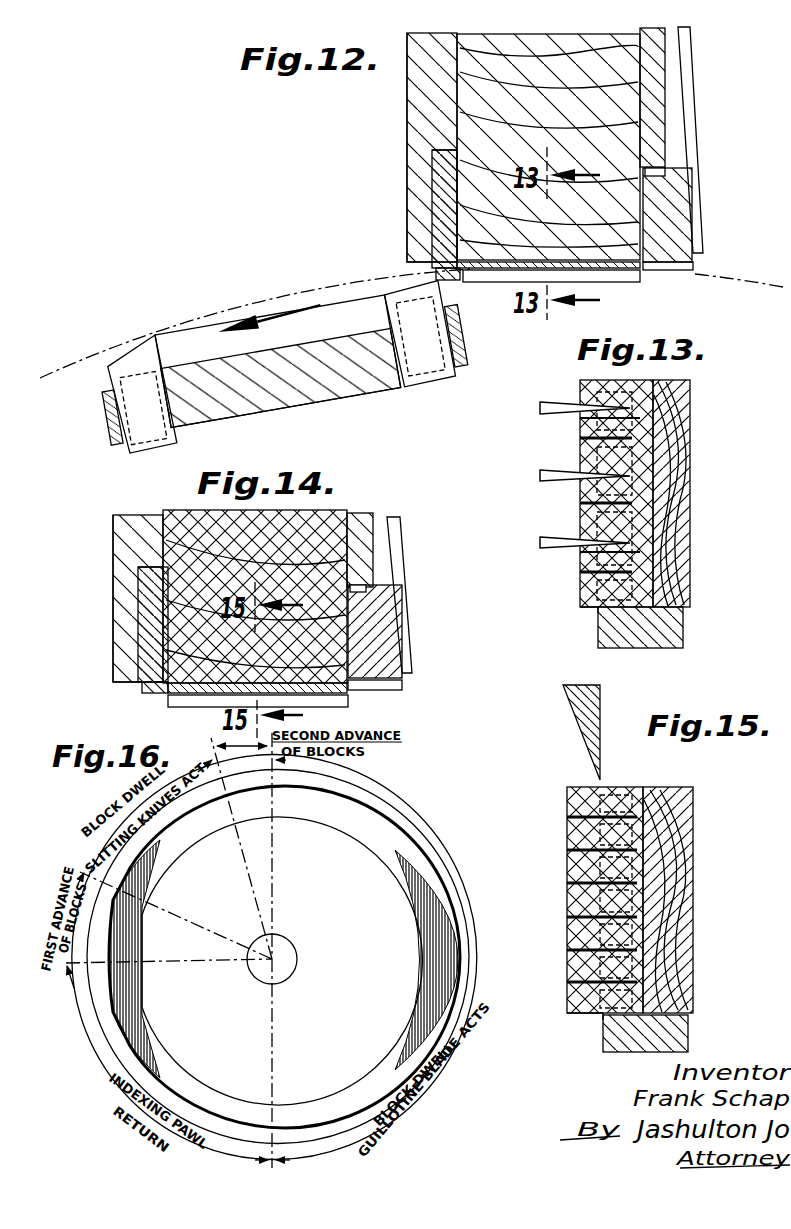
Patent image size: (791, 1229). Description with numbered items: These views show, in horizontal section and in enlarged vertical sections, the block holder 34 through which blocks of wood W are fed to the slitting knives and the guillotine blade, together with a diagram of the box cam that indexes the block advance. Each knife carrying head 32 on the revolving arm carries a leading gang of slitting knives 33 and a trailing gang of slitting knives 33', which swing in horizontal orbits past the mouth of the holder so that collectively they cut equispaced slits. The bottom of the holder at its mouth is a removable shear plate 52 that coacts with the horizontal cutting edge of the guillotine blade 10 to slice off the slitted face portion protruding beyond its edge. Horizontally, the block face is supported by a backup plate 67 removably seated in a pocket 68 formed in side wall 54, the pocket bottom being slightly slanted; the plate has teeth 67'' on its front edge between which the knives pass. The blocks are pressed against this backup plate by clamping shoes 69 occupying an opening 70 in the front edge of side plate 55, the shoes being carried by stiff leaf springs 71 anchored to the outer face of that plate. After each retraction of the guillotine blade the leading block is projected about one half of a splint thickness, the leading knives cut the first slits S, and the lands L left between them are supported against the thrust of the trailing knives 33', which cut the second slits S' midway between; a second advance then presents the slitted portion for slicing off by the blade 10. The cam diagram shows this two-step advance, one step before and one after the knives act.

In FIG. 15, the guillotine blade 10 is at (596, 708).
In FIG. 12, the knife carrying head 32 is at (290, 385).
In FIG. 12, the slitting knives 33 is at (135, 370).
In FIG. 12, the trailing slitting knives 33' is at (403, 314).
In FIG. 13, the trailing slitting knives 33' is at (565, 459).
In FIG. 12, the block holder 34 is at (400, 155).
In FIG. 14, the block holder 34 is at (112, 600).
In FIG. 13, the shear plate 52 is at (668, 628).
In FIG. 15, the shear plate 52 is at (672, 1035).
In FIG. 12, the side wall 54 is at (425, 92).
In FIG. 14, the side wall 54 is at (120, 537).
In FIG. 12, the side plate 55 is at (660, 76).
In FIG. 14, the side plate 55 is at (360, 538).
In FIG. 12, the backup plate 67 is at (402, 209).
In FIG. 14, the backup plate 67 is at (115, 624).
In FIG. 13, the ledge 67'' is at (570, 630).
In FIG. 15, the ledge 67'' is at (571, 1033).
In FIG. 12, the pocket 68 is at (436, 207).
In FIG. 14, the pocket 68 is at (150, 660).
In FIG. 12, the clamping shoes 69 is at (675, 202).
In FIG. 14, the clamping shoes 69 is at (382, 632).
In FIG. 12, the opening 70 is at (665, 172).
In FIG. 14, the opening 70 is at (368, 591).
In FIG. 12, the leaf springs 71 is at (689, 128).
In FIG. 14, the leaf springs 71 is at (397, 568).
In FIG. 12, the blocks of wood W is at (598, 45).
In FIG. 14, the blocks of wood W is at (340, 512).
In FIG. 13, the blocks of wood W is at (578, 604).
In FIG. 15, the blocks of wood W is at (620, 790).
In FIG. 13, the lands L is at (575, 421).
In FIG. 13, the first cut slits S is at (582, 520).
In FIG. 15, the first cut slits S is at (578, 956).
In FIG. 15, the second cut slits S' is at (579, 917).